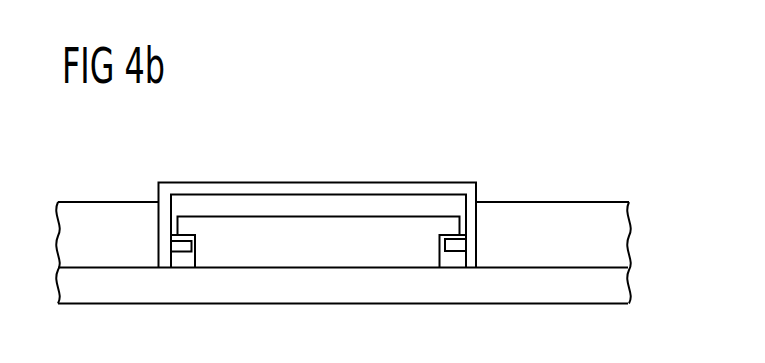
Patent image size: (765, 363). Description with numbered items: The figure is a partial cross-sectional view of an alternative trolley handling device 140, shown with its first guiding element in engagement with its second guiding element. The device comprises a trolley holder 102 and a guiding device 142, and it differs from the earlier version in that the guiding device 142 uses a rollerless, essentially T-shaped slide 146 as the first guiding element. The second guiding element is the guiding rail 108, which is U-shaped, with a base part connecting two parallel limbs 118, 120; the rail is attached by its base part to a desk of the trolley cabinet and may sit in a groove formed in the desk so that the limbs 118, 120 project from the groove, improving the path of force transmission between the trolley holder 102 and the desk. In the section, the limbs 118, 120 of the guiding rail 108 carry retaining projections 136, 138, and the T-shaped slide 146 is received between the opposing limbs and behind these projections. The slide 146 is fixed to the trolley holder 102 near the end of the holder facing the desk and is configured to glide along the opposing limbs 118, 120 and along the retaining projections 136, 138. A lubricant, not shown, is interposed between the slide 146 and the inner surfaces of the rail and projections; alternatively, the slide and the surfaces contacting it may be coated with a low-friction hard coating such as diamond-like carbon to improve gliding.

The trolley holder 102 is at (443, 297).
The guiding rail 108 is at (318, 182).
The limb 118 is at (472, 222).
The limb 120 is at (168, 218).
The retaining projection 136 is at (447, 244).
The retaining projection 138 is at (186, 246).
The alternative trolley handling device 140 is at (555, 100).
The guiding device 142 is at (402, 137).
The slide 146 is at (290, 230).